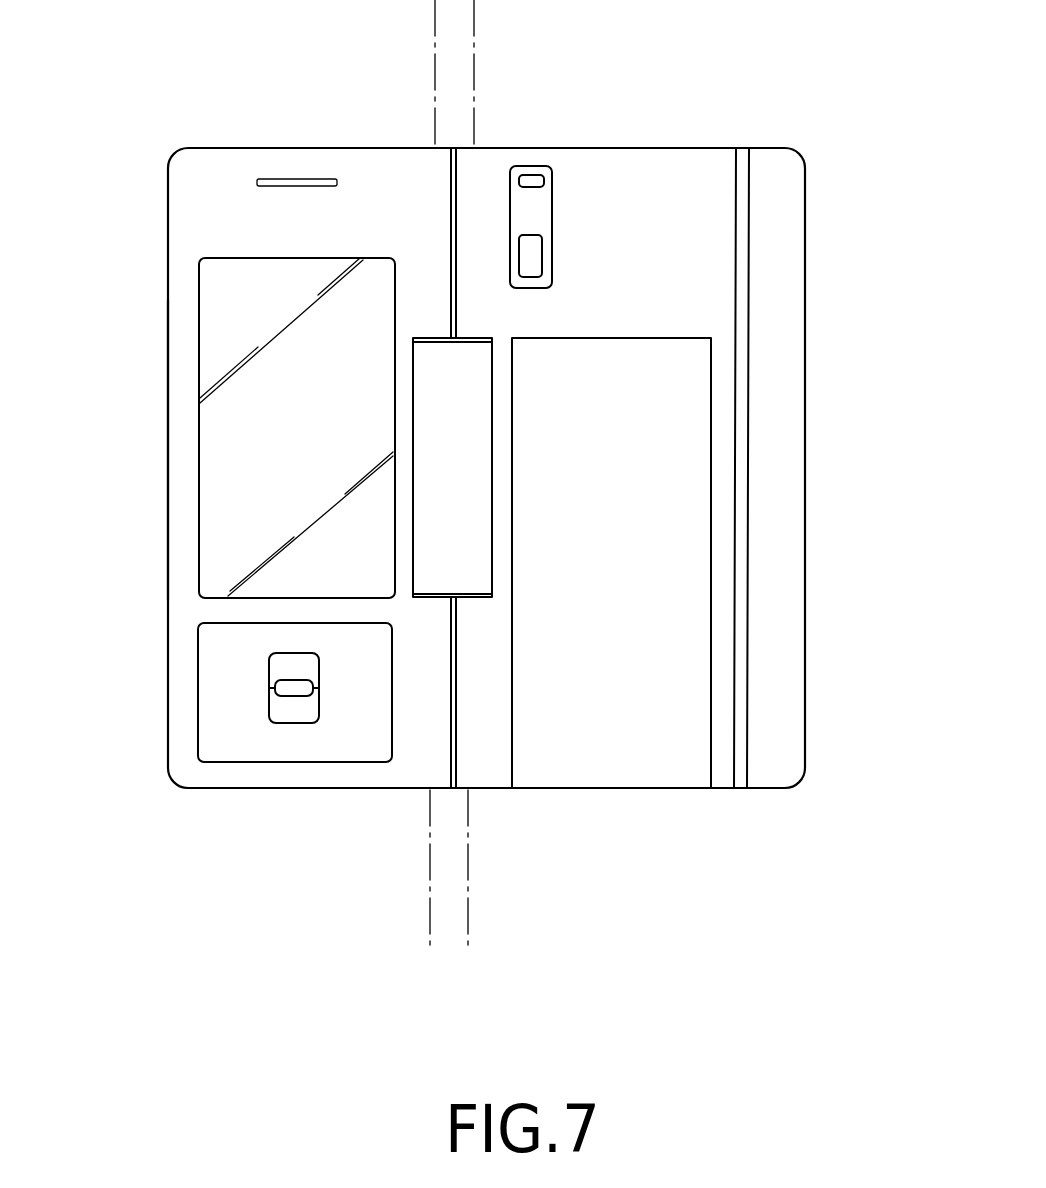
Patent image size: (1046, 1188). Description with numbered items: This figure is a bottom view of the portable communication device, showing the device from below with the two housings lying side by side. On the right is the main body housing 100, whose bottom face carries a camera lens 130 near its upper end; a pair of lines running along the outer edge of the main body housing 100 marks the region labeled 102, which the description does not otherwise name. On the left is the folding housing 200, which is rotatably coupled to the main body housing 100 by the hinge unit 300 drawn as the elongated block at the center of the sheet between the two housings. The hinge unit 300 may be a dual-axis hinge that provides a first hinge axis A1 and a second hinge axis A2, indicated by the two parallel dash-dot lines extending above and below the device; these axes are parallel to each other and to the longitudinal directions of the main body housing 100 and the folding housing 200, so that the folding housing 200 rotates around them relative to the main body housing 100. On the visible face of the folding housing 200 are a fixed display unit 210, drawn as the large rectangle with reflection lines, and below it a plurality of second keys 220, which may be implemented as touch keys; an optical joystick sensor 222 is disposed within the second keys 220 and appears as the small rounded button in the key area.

The main body housing 100 is at (820, 667).
The side portion of main body 102 is at (790, 462).
The camera lens 130 is at (532, 254).
The folding housing 200 is at (158, 583).
The fixed display unit 210 is at (212, 449).
The second keys 220 is at (225, 695).
The optical joystick sensor 222 is at (298, 713).
The hinge unit 300 is at (470, 573).
The first hinge axis A1 is at (470, 918).
The second hinge axis A2 is at (427, 918).